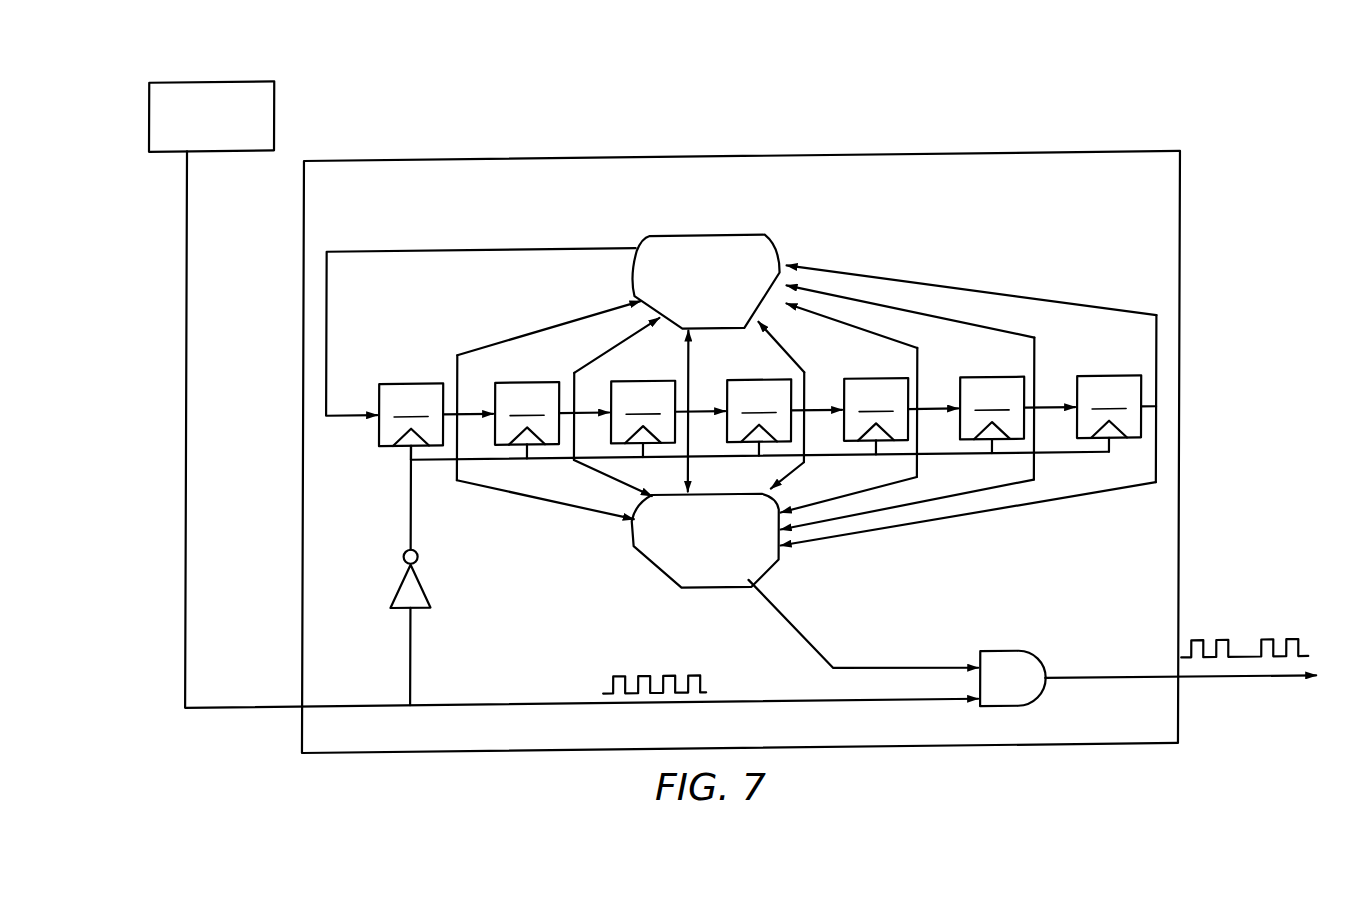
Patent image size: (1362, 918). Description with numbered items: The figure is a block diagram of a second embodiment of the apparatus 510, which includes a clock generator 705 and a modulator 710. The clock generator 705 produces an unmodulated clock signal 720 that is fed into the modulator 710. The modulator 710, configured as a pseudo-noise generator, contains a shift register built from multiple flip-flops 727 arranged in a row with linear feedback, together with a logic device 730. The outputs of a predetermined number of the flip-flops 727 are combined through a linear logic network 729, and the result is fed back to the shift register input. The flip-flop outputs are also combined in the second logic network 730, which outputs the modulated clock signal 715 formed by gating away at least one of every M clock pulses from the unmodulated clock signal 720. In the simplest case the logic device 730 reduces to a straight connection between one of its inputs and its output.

The apparatus 510 is at (1104, 62).
The clock generator 705 is at (205, 81).
The modulator 710 is at (598, 159).
The modulated clock signal 715 is at (1228, 648).
The unmodulated clock signal 720 is at (645, 682).
The flip-flops 727 is at (760, 417).
The linear logic network 729 is at (725, 325).
The logic device 730 is at (1000, 659).